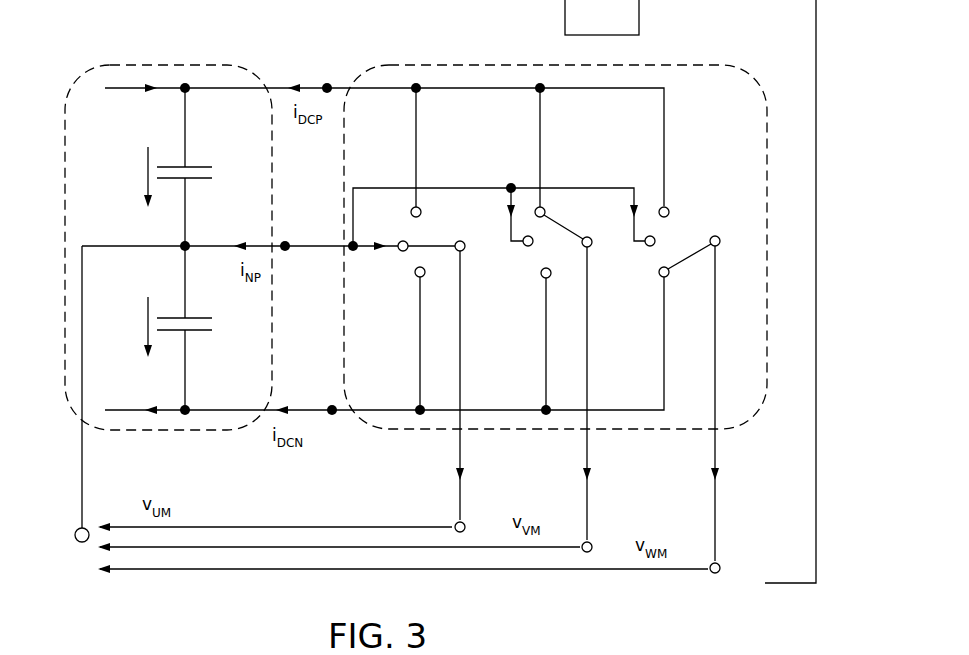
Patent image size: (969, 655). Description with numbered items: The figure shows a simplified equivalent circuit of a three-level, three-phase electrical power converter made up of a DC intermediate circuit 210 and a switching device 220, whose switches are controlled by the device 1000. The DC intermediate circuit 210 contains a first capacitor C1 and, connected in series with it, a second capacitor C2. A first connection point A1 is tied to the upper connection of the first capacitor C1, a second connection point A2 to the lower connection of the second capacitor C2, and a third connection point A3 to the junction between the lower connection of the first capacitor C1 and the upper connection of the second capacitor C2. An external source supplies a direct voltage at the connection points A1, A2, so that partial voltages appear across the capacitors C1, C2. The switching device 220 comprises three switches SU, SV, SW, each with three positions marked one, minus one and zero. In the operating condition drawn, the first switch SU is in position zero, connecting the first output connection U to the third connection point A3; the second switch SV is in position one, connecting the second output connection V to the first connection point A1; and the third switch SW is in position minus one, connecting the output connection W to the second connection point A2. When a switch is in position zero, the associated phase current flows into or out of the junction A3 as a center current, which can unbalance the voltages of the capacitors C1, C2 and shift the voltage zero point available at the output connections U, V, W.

The device for controlling the electrical power converter 1000 is at (578, 29).
The DC intermediate circuit 210 is at (168, 65).
The switching device 220 is at (448, 65).
The first connection point A1 is at (328, 84).
The second connection point A2 is at (333, 414).
The third connection point A3 is at (286, 242).
The first capacitor C1 is at (202, 167).
The second capacitor C2 is at (202, 328).
The first switch SU is at (442, 163).
The second switch SV is at (572, 165).
The third switch SW is at (692, 170).
The first output connection U is at (462, 520).
The second output connection V is at (590, 540).
The third output connection W is at (718, 560).